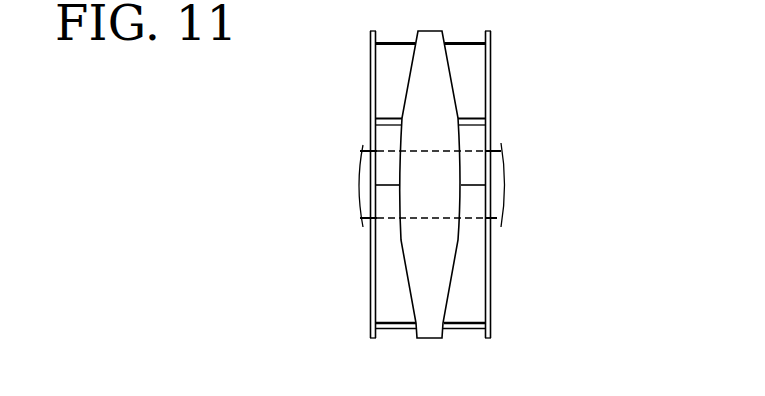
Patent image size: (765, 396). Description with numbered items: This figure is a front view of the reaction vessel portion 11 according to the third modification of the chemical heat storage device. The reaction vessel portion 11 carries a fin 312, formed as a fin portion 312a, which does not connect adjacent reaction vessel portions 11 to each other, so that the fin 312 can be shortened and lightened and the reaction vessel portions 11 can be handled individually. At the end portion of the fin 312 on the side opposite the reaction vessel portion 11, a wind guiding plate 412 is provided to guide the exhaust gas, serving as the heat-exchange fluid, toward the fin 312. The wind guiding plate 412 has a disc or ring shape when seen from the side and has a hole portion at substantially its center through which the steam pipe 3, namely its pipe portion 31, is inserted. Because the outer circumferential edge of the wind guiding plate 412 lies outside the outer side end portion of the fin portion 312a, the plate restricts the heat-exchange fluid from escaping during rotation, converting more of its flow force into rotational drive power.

The reaction vessel portion 11 is at (402, 83).
The wind guiding plate 412 is at (374, 113).
The pipe portion 31 is at (428, 185).
The steam pipe 3 is at (360, 185).
The fin 312 is at (430, 307).
The fin portion 312a is at (430, 326).